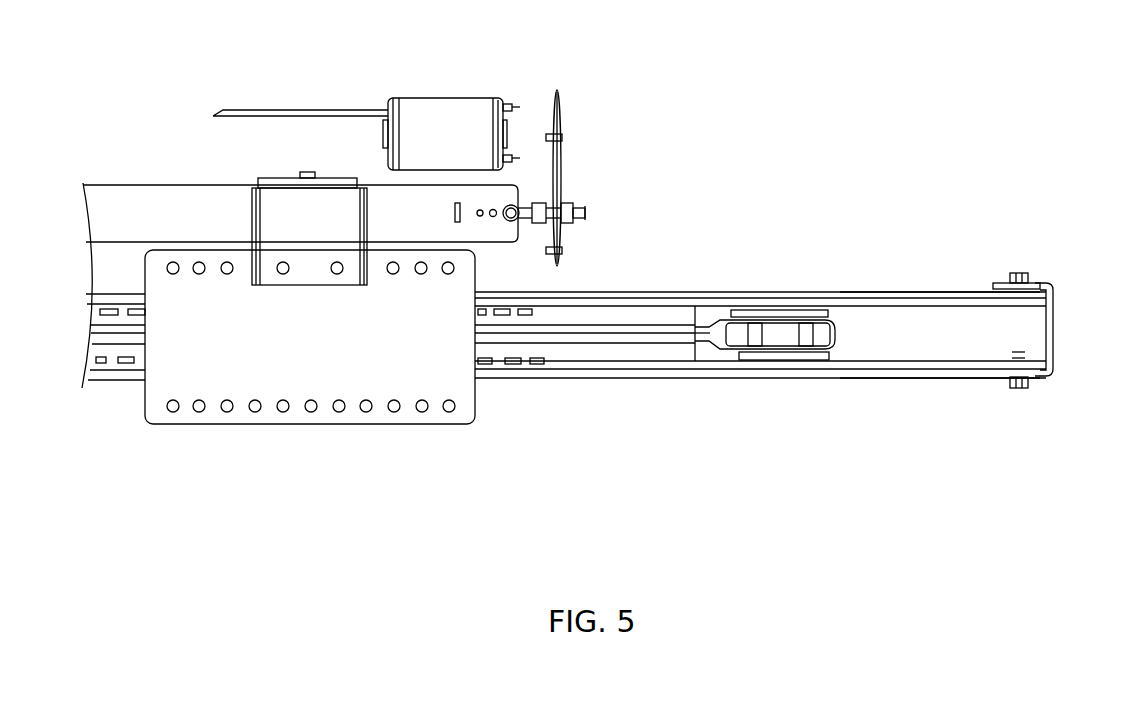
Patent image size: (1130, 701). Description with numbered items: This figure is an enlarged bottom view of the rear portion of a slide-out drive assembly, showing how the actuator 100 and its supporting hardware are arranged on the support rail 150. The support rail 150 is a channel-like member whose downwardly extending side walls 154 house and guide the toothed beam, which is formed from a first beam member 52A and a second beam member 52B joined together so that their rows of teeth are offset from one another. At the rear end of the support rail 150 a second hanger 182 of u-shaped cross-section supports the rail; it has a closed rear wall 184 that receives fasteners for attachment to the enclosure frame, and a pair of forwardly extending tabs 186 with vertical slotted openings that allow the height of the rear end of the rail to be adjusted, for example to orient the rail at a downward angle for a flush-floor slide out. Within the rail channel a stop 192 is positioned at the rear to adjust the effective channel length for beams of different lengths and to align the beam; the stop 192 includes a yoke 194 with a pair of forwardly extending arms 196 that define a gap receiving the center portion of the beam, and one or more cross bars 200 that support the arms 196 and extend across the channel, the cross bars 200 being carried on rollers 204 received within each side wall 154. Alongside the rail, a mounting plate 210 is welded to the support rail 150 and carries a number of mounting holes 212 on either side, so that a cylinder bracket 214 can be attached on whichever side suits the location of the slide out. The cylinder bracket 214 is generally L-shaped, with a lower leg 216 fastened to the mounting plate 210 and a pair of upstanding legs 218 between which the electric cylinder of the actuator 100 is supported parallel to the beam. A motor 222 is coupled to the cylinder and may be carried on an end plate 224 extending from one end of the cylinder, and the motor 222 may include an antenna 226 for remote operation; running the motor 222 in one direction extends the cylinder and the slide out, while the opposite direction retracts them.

The actuator 100 is at (316, 88).
The support rail 150 is at (566, 322).
The first beam member 52A is at (598, 306).
The second beam member 52B is at (592, 360).
The side wall 154 is at (895, 290).
The second hanger 182 is at (1049, 325).
The rear wall 184 is at (1055, 325).
The tab 186 is at (1002, 280).
The stop 192 is at (741, 309).
The yoke 194 is at (768, 336).
The arm 196 is at (704, 320).
The cross bar 200 is at (793, 338).
The roller 204 is at (790, 318).
The mounting plate 210 is at (310, 306).
The mounting hole 212 is at (227, 262).
The cylinder bracket 214 is at (295, 205).
The lower leg 216 is at (280, 216).
The upstanding leg 218 is at (338, 178).
The motor 222 is at (461, 110).
The end plate 224 is at (562, 168).
The antenna 226 is at (244, 108).